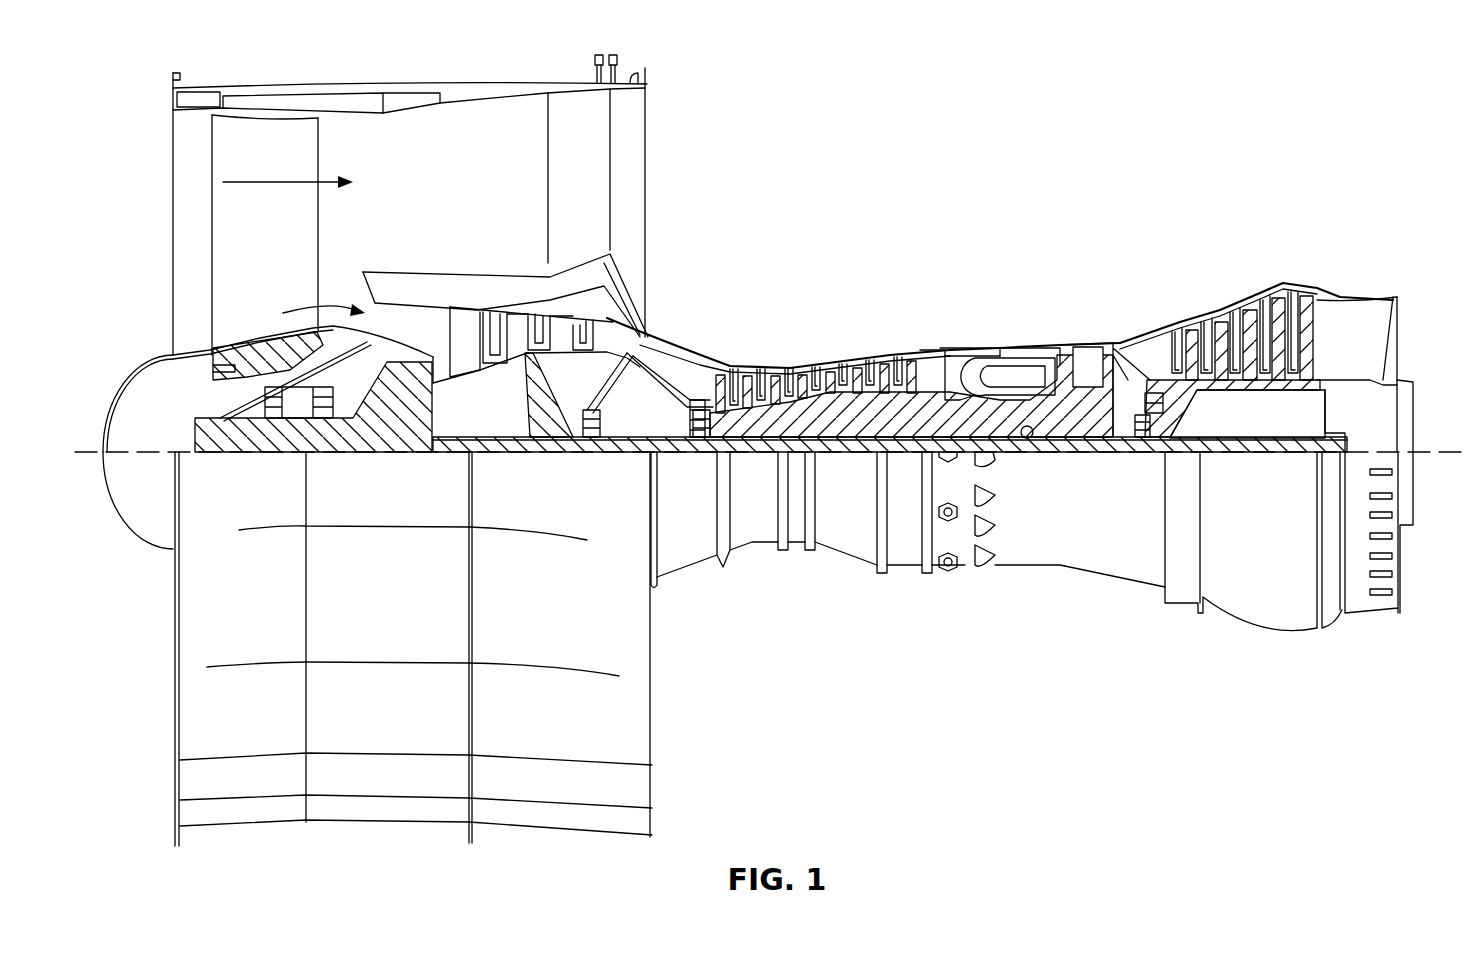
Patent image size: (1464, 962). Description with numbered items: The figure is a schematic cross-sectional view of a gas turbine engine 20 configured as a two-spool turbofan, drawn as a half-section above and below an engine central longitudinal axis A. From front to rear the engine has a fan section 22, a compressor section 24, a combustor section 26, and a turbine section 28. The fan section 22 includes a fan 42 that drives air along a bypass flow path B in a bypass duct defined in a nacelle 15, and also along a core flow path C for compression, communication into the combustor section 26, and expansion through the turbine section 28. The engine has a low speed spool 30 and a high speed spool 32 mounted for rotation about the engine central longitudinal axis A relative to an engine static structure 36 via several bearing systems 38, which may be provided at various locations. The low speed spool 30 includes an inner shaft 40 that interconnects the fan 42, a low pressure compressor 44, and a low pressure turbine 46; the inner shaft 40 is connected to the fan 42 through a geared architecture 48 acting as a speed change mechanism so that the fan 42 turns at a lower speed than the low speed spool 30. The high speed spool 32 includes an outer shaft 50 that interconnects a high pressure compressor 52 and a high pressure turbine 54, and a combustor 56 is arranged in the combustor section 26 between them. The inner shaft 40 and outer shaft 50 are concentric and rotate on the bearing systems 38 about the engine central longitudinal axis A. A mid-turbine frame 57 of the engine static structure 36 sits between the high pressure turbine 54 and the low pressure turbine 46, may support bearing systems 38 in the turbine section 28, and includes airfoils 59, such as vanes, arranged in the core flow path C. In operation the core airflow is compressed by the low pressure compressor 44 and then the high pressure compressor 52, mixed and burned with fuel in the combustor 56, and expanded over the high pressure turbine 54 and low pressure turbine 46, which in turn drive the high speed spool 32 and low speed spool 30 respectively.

The nacelle 15 is at (405, 88).
The gas turbine engine 20 is at (769, 434).
The fan section 22 is at (412, 434).
The compressor section 24 is at (693, 331).
The combustor section 26 is at (1000, 323).
The turbine section 28 is at (1263, 422).
The low speed spool 30 is at (890, 470).
The high speed spool 32 is at (892, 403).
The engine static structure 36 is at (908, 573).
The bearing systems 38 is at (590, 437).
The inner shaft 40 is at (660, 447).
The fan 42 is at (262, 230).
The low pressure compressor 44 is at (543, 335).
The low pressure turbine 46 is at (1253, 310).
The geared architecture 48 is at (411, 418).
The outer shaft 50 is at (1030, 440).
The high pressure compressor 52 is at (825, 420).
The high pressure turbine 54 is at (1087, 347).
The combustor 56 is at (1010, 370).
The mid-turbine frame 57 is at (1133, 340).
The airfoils 59 is at (1140, 370).
The engine central longitudinal axis A is at (1422, 450).
The bypass flow path B is at (290, 180).
The core flow path C is at (300, 307).